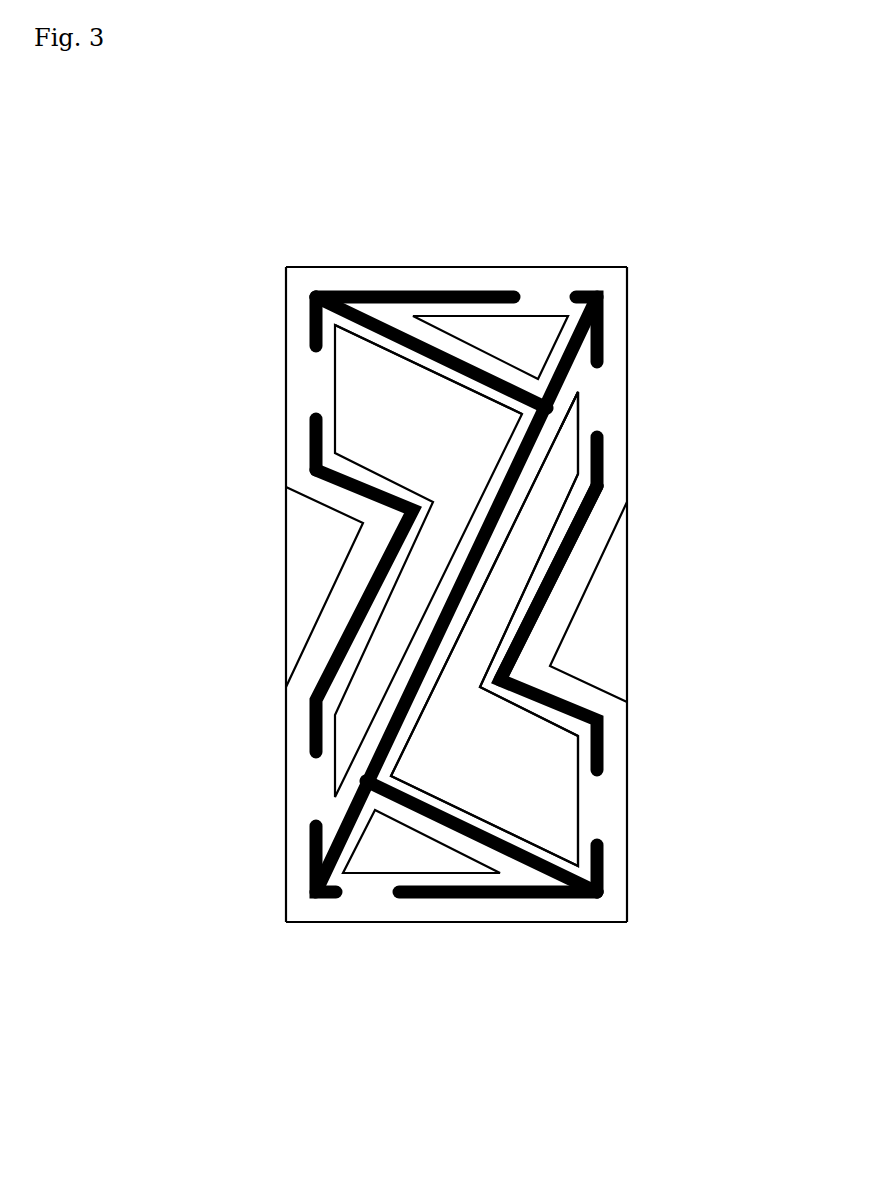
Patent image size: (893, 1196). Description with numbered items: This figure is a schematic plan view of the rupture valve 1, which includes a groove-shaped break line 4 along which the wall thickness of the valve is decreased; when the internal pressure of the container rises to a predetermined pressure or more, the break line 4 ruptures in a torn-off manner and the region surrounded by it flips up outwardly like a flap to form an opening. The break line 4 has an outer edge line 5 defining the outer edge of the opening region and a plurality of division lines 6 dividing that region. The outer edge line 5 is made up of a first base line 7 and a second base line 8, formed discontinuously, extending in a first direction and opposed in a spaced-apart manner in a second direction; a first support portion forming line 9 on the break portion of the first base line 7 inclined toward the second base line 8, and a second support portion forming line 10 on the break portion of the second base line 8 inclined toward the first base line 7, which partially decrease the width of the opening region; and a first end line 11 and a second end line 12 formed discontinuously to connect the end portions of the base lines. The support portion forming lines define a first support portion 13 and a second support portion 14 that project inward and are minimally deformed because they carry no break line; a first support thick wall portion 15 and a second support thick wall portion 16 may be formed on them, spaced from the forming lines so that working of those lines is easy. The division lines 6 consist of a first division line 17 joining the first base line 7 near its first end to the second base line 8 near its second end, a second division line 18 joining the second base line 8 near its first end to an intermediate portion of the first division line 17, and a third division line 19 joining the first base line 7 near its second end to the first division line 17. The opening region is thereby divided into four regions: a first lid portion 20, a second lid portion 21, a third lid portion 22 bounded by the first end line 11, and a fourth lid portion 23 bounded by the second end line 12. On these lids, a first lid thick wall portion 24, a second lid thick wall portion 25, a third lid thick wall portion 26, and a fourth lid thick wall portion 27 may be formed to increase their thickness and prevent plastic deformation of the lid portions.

The rupture valve 1 is at (660, 247).
The break line 4 is at (597, 283).
The outer edge line 5 is at (442, 287).
The division lines 6 is at (473, 362).
The first base line 7 is at (601, 462).
The second base line 8 is at (308, 437).
The first support portion forming line 9 is at (553, 593).
The second support portion forming line 10 is at (375, 562).
The first end line 11 is at (363, 292).
The second end line 12 is at (498, 898).
The first support portion 13 is at (628, 637).
The second support portion 14 is at (283, 583).
The first support thick wall portion 15 is at (615, 672).
The second support thick wall portion 16 is at (297, 623).
The first division line 17 is at (577, 392).
The second division line 18 is at (399, 323).
The third division line 19 is at (535, 856).
The first lid portion 20 is at (593, 798).
The second lid portion 21 is at (315, 363).
The third lid portion 22 is at (552, 298).
The fourth lid portion 23 is at (378, 875).
The first lid thick wall portion 24 is at (541, 757).
The second lid thick wall portion 25 is at (368, 405).
The third lid thick wall portion 26 is at (508, 325).
The fourth lid thick wall portion 27 is at (425, 862).